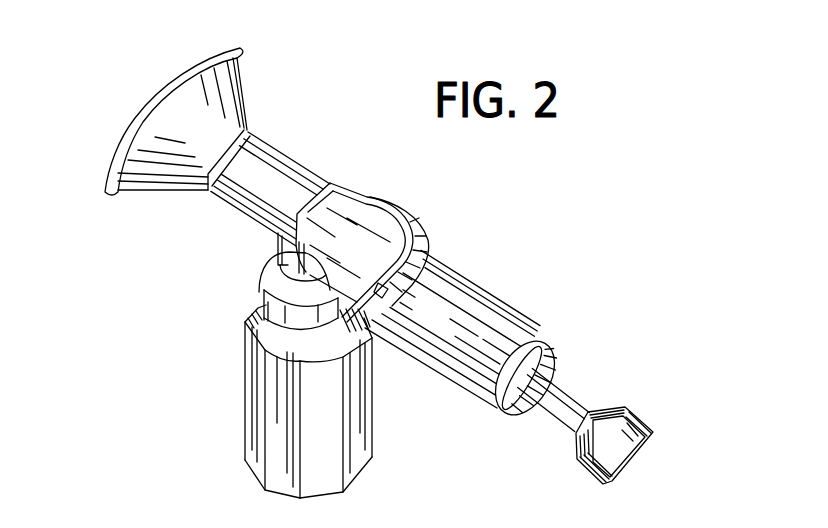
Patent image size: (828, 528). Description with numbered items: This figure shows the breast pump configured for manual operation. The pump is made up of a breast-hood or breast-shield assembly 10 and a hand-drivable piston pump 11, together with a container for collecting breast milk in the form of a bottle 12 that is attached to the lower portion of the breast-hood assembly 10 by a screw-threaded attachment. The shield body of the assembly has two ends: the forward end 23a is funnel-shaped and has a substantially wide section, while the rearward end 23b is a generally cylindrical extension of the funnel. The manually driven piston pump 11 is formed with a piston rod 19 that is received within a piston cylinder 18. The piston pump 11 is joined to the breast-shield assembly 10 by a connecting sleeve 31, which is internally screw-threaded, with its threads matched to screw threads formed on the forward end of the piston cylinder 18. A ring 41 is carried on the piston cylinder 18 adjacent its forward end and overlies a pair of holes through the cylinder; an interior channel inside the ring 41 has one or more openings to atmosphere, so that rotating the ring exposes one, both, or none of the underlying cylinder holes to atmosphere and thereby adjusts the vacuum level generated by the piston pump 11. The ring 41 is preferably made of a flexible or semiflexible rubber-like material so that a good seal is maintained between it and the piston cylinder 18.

The breast-hood assembly 10 is at (310, 157).
The piston pump 11 is at (493, 294).
The bottle 12 is at (245, 381).
The piston cylinder 18 is at (426, 352).
The piston rod 19 is at (557, 367).
The forward end 23a is at (233, 93).
The rearward end 23b is at (240, 204).
The connecting sleeve 31 is at (387, 202).
The ring 41 is at (425, 246).